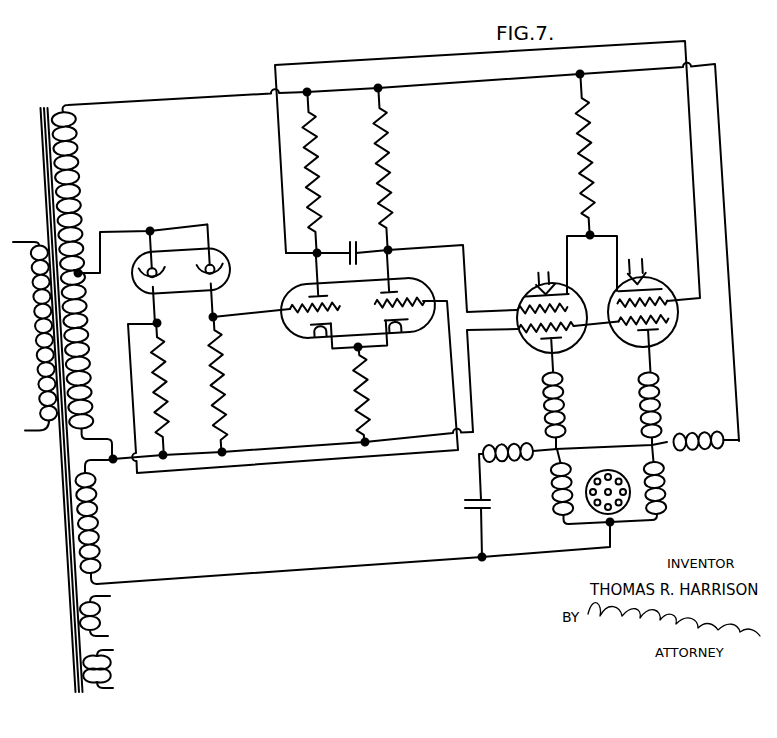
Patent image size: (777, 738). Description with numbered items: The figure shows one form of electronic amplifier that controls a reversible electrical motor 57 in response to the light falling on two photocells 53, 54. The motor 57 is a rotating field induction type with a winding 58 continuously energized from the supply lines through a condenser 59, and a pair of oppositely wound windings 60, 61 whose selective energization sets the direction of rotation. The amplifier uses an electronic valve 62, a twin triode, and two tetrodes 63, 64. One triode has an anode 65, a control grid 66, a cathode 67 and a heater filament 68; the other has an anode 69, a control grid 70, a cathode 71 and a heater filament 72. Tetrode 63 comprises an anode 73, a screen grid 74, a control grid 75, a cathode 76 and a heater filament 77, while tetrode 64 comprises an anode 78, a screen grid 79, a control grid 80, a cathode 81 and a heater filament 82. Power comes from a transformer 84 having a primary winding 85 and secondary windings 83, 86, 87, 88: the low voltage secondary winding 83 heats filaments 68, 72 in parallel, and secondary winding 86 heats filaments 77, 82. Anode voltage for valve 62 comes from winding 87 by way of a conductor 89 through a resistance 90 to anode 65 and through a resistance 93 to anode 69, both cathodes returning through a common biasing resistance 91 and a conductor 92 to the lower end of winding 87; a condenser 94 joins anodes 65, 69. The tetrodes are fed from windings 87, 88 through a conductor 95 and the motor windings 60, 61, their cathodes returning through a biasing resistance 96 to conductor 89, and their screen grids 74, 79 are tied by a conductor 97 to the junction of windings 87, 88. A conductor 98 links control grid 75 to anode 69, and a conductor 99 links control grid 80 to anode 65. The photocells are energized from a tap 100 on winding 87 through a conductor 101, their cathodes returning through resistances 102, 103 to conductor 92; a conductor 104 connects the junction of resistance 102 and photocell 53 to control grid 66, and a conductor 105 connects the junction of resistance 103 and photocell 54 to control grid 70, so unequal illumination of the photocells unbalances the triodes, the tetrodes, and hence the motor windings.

The photocell 53 is at (222, 263).
The photocell 54 is at (141, 262).
The reversible electrical motor 57 is at (602, 409).
The winding 58 is at (523, 465).
The condenser 59 is at (463, 505).
The winding 60 is at (559, 403).
The winding 61 is at (640, 378).
The electronic valve 62 is at (351, 309).
The electronic valve 63 is at (545, 307).
The electronic valve 64 is at (661, 300).
The anode 65 is at (328, 293).
The control grid 66 is at (283, 325).
The cathode 67 is at (292, 336).
The heater filament 68 is at (312, 341).
The anode 69 is at (393, 289).
The control grid 70 is at (420, 284).
The cathode 71 is at (413, 325).
The heater filament 72 is at (405, 338).
The anode 73 is at (541, 350).
The screen grid 74 is at (518, 331).
The control grid 75 is at (517, 322).
The cathode 76 is at (520, 295).
The heater filament 77 is at (542, 283).
The anode 78 is at (654, 343).
The screen grid 79 is at (673, 331).
The control grid 80 is at (676, 308).
The cathode 81 is at (665, 284).
The heater filament 82 is at (633, 266).
The secondary winding 83 is at (97, 612).
The transformer 84 is at (63, 533).
The primary winding 85 is at (38, 354).
The secondary winding 86 is at (100, 658).
The secondary winding 87 is at (69, 190).
The secondary winding 88 is at (90, 528).
The conductor 89 is at (181, 106).
The resistance 90 is at (318, 148).
The biasing resistance 91 is at (357, 398).
The conductor 92 is at (252, 448).
The resistance 93 is at (388, 147).
The condenser 94 is at (355, 233).
The conductor 95 is at (257, 571).
The biasing resistance 96 is at (578, 143).
The conductor 97 is at (482, 386).
The conductor 98 is at (424, 243).
The conductor 99 is at (692, 145).
The tap 100 is at (79, 275).
The conductor 101 is at (122, 232).
The resistance 102 is at (223, 388).
The resistance 103 is at (165, 417).
The conductor 104 is at (249, 306).
The conductor 105 is at (128, 385).